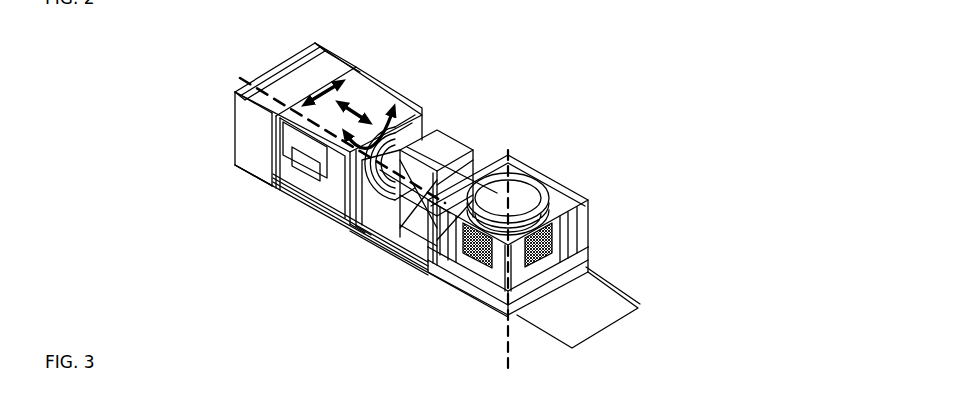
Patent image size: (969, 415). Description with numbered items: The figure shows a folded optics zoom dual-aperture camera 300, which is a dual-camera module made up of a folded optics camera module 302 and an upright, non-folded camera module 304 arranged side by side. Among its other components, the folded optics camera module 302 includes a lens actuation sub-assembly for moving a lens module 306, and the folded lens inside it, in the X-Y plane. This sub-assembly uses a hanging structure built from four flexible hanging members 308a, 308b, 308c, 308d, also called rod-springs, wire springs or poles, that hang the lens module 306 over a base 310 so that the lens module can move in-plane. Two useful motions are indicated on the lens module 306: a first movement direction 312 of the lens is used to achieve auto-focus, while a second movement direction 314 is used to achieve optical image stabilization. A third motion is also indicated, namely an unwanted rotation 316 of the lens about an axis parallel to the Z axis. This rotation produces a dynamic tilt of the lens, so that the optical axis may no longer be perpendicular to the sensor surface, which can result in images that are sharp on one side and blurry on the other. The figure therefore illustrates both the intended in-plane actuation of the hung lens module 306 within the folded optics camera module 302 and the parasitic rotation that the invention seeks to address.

The camera 300 is at (478, 22).
The folded optics camera module 302 is at (413, 92).
The upright camera module 304 is at (563, 180).
The lens module 306 is at (320, 163).
The flexible hanging member 308a is at (270, 163).
The flexible hanging member 308b is at (343, 220).
The flexible hanging member 308c is at (417, 145).
The flexible hanging member 308d is at (348, 60).
The base 310 is at (343, 222).
The first movement direction 312 is at (356, 100).
The second movement direction 314 is at (318, 88).
The unwanted rotation 316 is at (418, 127).